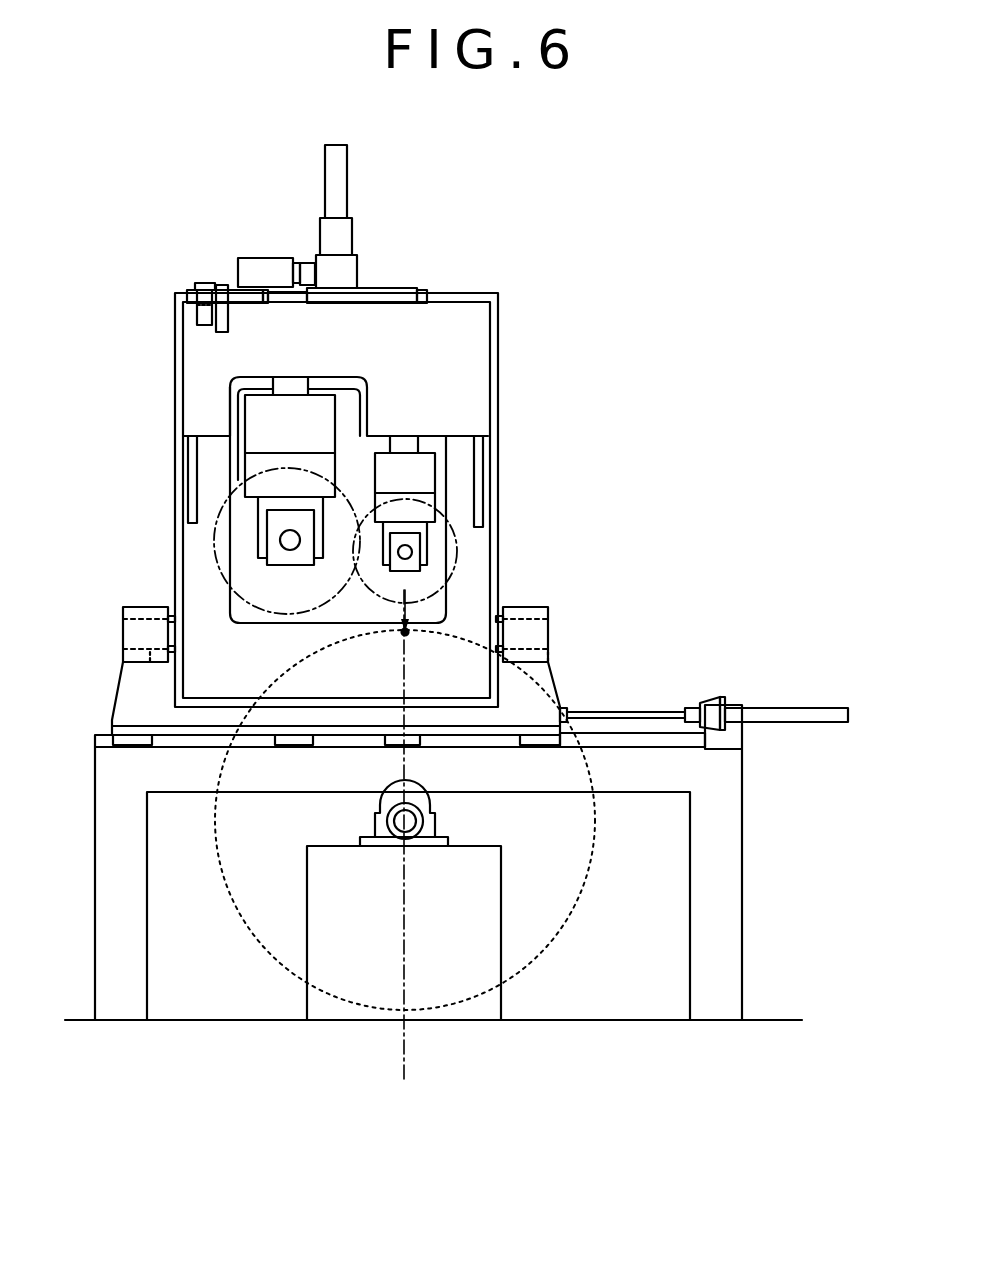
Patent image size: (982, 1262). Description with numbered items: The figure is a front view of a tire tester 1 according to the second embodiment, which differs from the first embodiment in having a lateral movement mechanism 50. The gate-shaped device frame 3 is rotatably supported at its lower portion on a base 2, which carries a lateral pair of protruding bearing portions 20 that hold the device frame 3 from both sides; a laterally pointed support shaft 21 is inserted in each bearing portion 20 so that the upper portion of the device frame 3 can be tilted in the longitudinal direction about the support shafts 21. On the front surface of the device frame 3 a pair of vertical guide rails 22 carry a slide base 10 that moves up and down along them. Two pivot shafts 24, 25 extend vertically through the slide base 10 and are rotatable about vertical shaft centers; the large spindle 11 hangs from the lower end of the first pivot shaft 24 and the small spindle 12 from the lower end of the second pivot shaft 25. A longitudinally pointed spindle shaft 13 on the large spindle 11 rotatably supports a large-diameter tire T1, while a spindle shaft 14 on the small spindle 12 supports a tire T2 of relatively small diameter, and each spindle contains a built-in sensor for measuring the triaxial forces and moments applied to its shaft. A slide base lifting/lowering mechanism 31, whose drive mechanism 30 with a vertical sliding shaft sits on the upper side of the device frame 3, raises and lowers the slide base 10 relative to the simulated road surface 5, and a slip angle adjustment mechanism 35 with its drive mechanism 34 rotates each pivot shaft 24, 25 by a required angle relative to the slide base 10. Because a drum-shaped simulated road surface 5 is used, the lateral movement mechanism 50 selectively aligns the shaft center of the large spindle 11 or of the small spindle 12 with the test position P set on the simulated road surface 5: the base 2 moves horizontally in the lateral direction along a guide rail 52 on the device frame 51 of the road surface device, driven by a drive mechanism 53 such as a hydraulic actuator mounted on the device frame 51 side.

The tire tester 1 is at (589, 231).
The base 2 is at (112, 718).
The device frame 3 is at (490, 398).
The simulated road surface 5 is at (396, 622).
The slide base 10 is at (458, 293).
The large spindle 11 is at (288, 510).
The small spindle 12 is at (405, 533).
The spindle shaft 13 is at (290, 551).
The spindle shaft 14 is at (420, 551).
The bearing portions 20 is at (141, 607).
The support shaft 21 is at (150, 652).
The guide rails 22 is at (188, 522).
The first pivot shaft 24 is at (308, 390).
The second pivot shaft 25 is at (418, 446).
The drive mechanism 30 is at (352, 238).
The slide base lifting/lowering mechanism 31 is at (376, 259).
The drive mechanism 34 is at (221, 285).
The slip angle adjustment mechanism 35 is at (201, 284).
The lateral movement mechanism 50 is at (719, 678).
The device frame 51 is at (742, 880).
The guide rail 52 is at (652, 733).
The drive mechanism 53 is at (828, 706).
The large-diameter tire T1 is at (221, 527).
The tire T2 is at (470, 498).
The test position P is at (410, 631).